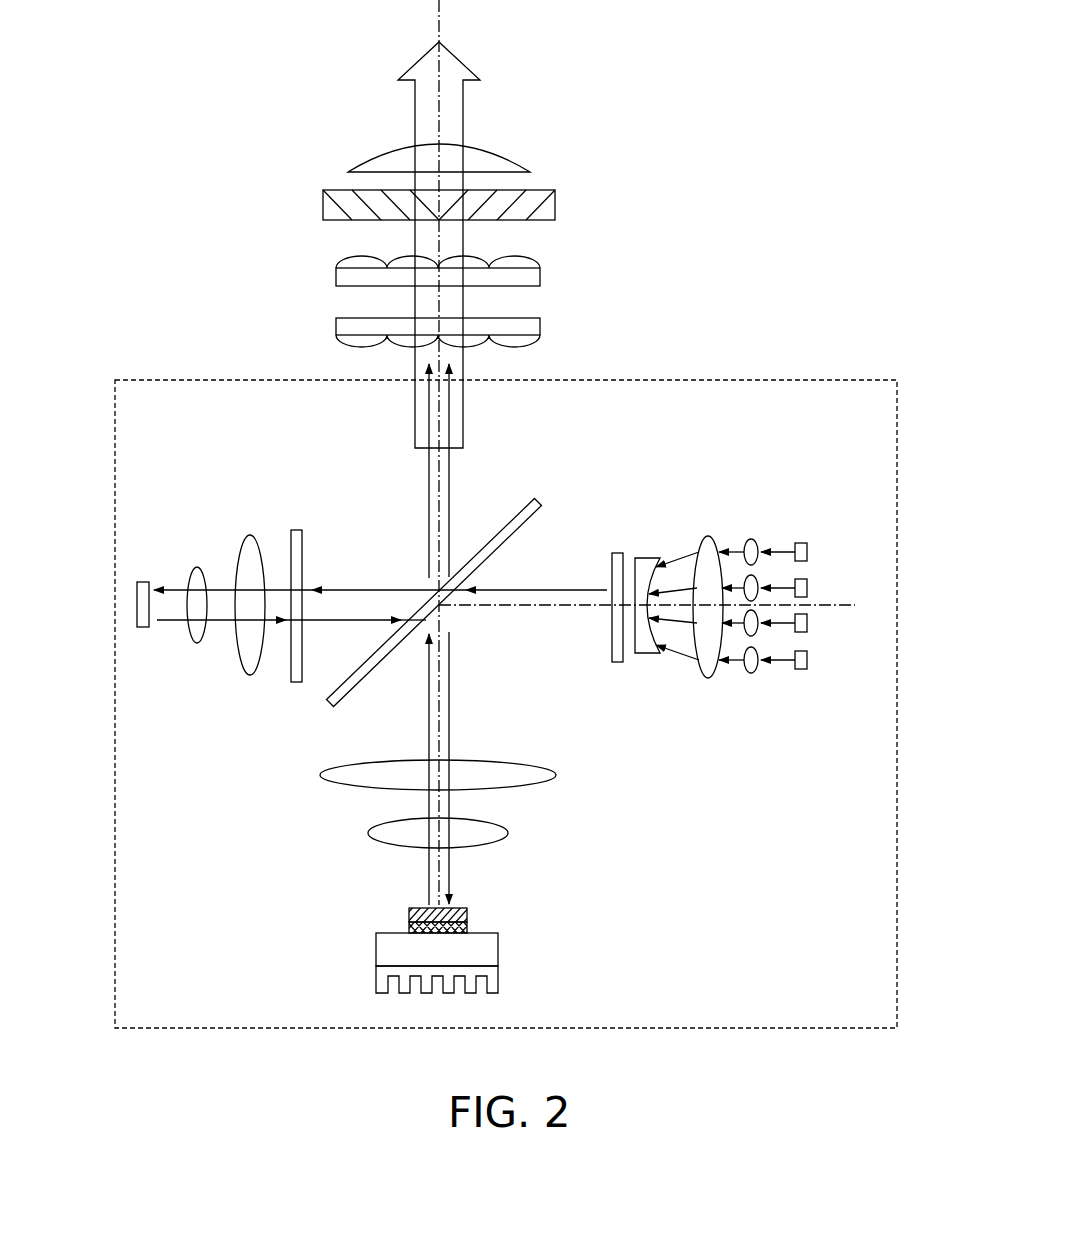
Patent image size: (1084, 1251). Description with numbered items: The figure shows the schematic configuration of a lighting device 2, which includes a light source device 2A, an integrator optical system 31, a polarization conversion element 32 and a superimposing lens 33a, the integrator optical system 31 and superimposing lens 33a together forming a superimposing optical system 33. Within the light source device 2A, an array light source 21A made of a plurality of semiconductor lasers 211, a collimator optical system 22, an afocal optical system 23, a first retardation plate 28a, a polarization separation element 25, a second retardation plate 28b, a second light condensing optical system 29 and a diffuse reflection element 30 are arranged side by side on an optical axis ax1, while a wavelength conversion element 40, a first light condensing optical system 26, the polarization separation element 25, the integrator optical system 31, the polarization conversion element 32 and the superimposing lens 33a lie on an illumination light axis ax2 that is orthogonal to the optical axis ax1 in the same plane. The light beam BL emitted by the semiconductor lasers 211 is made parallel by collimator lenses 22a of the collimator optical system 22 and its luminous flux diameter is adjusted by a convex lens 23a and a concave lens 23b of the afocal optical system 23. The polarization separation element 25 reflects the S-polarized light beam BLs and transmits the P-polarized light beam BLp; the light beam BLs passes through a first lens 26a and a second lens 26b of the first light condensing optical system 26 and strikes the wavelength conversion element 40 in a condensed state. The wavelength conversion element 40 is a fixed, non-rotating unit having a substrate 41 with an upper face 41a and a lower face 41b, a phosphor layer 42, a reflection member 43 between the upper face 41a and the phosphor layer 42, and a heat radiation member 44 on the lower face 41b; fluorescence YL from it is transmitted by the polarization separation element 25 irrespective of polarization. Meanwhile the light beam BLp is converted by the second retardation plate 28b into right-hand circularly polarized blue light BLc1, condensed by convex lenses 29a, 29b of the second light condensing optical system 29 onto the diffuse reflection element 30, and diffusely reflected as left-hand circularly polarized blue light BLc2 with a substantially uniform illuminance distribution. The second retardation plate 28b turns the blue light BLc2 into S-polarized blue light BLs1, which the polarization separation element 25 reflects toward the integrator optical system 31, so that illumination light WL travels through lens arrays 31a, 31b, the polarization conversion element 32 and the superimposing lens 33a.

The lighting device 2 is at (506, 514).
The light source device 2A is at (786, 380).
The array light source 21A is at (839, 559).
The semiconductor laser 211 is at (808, 551).
The collimator optical system 22 is at (761, 540).
The collimator lens 22a is at (748, 538).
The afocal optical system 23 is at (687, 559).
The convex lens 23a is at (706, 537).
The concave lens 23b is at (648, 560).
The polarization separation element 25 is at (523, 504).
The first light condensing optical system 26 is at (502, 797).
The first lens 26a is at (545, 766).
The second lens 26b is at (500, 820).
The first retardation plate 28a is at (617, 553).
The second retardation plate 28b is at (296, 530).
The second light condensing optical system 29 is at (211, 549).
The convex lens 29a is at (190, 567).
The convex lens 29b is at (245, 535).
The diffuse reflection element 30 is at (146, 582).
The integrator optical system 31 is at (508, 302).
The lens array 31a is at (542, 328).
The lens array 31b is at (542, 278).
The polarization conversion element 32 is at (557, 208).
The superimposing optical system 33 is at (505, 155).
The superimposing lens 33a is at (531, 166).
The wavelength conversion element 40 is at (417, 932).
The substrate 41 is at (498, 952).
The upper face 41a is at (388, 933).
The lower face 41b is at (393, 967).
The phosphor layer 42 is at (469, 912).
The reflection member 43 is at (469, 928).
The heat radiation member 44 is at (498, 985).
The illumination light WL is at (415, 118).
The fluorescence YL is at (429, 492).
The light beam BL is at (568, 590).
The S-polarized light beam BLs is at (449, 730).
The S-polarized blue light BLs1 is at (449, 478).
The P-polarized light beam BLp is at (352, 590).
The circularly polarized blue light BLc1 is at (277, 588).
The diffusely reflected blue light BLc2 is at (268, 641).
The optical axis ax1 is at (834, 608).
The illumination light axis ax2 is at (443, 6).